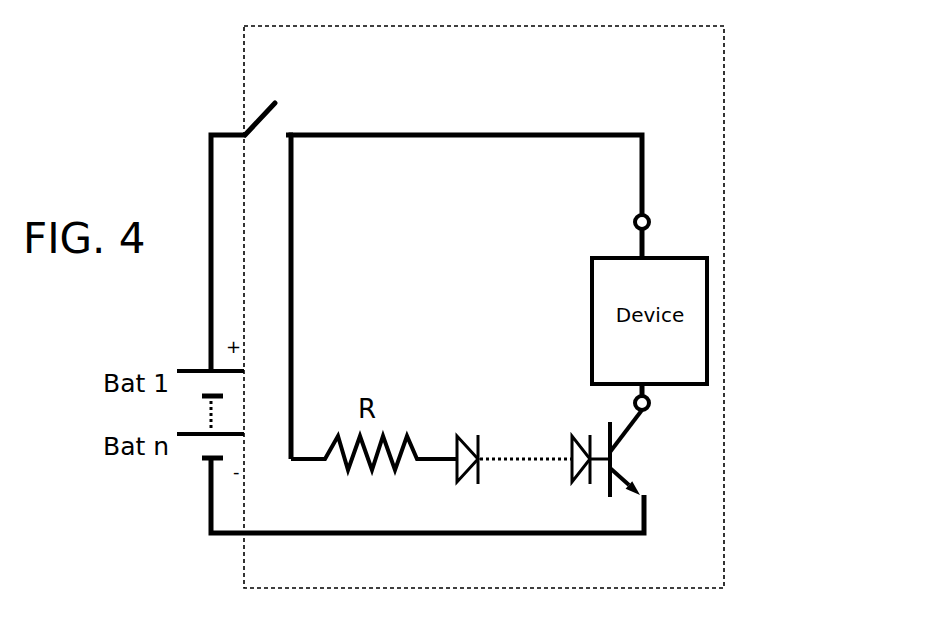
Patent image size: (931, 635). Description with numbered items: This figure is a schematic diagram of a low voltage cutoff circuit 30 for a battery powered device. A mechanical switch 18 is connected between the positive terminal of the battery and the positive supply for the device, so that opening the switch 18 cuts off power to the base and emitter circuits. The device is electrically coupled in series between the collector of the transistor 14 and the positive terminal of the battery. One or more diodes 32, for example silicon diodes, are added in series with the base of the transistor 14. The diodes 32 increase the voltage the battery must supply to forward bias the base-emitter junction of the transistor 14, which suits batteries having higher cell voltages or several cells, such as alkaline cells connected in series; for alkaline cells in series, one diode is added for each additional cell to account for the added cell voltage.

The transistor 14 is at (671, 429).
The mechanical switch 18 is at (297, 113).
The low voltage cutoff circuit 30 is at (724, 136).
The diodes 32 is at (499, 368).